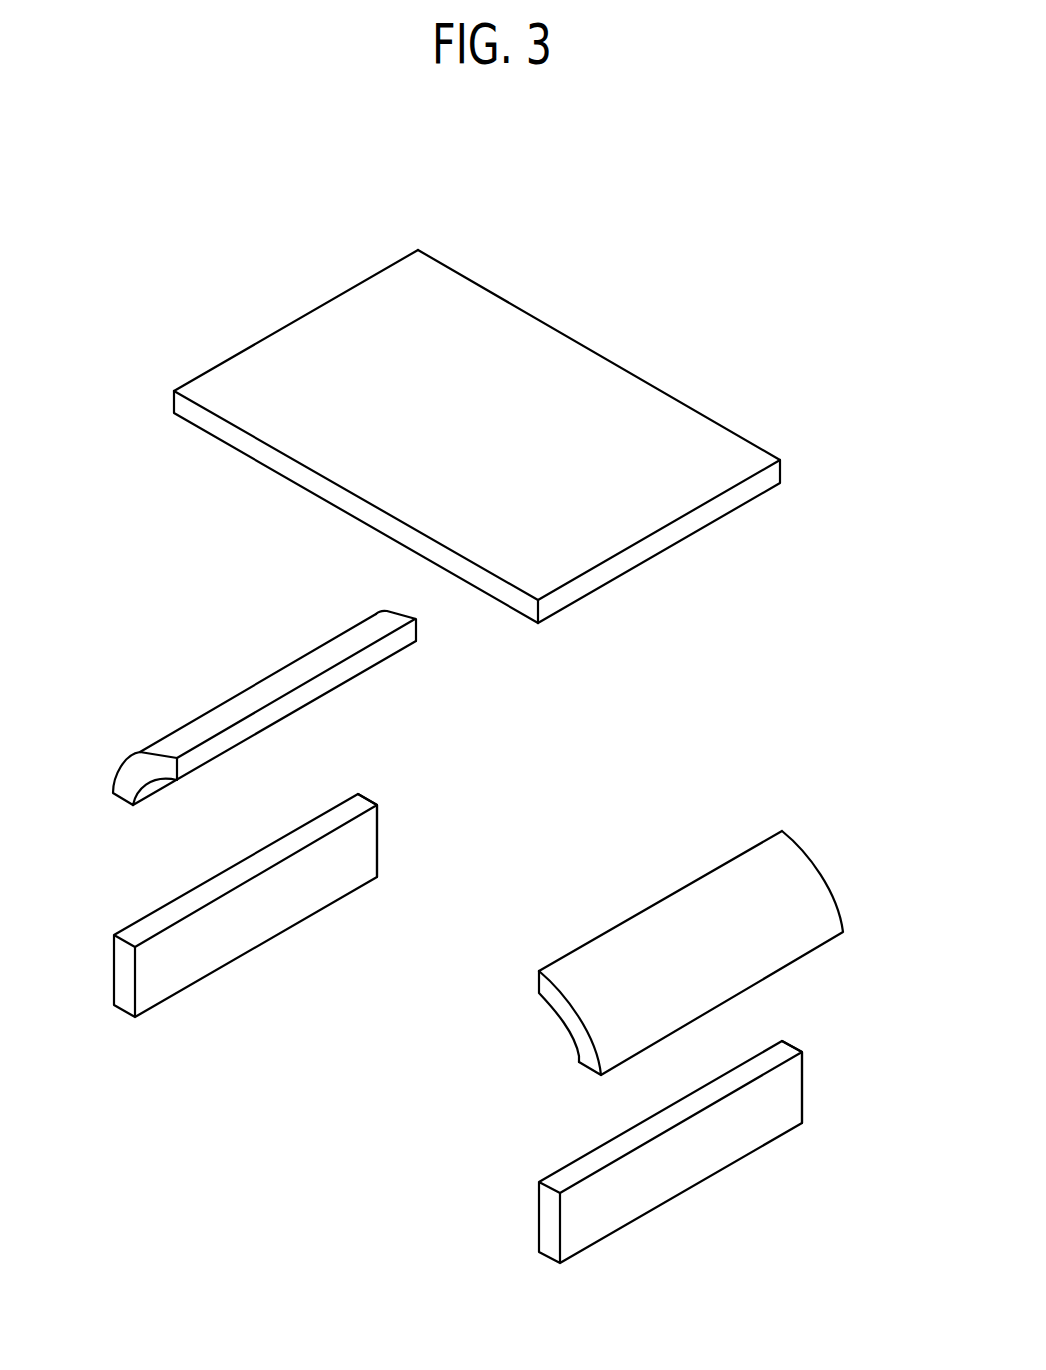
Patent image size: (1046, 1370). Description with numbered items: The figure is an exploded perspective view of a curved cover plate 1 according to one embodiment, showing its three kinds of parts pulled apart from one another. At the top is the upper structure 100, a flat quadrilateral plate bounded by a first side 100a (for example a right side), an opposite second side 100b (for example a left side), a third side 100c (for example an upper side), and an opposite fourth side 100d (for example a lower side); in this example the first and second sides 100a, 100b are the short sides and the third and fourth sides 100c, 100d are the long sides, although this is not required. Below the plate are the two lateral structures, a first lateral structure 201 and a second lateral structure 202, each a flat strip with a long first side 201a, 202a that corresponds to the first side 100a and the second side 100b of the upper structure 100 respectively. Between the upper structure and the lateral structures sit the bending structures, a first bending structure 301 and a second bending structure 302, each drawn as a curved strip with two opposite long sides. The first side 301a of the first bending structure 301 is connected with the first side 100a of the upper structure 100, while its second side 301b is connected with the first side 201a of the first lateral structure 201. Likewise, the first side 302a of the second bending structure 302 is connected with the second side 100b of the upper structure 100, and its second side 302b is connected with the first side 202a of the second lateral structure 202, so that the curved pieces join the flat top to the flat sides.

The curved cover plate 1 is at (790, 275).
The upper structure 100 is at (490, 436).
The first side of the upper structure 100a is at (658, 542).
The second side of the upper structure 100b is at (293, 317).
The third side of the upper structure 100c is at (605, 355).
The fourth side of the upper structure 100d is at (340, 494).
The first lateral structure 201 is at (707, 1134).
The first side of the first lateral structure 201a is at (788, 1050).
The second lateral structure 202 is at (282, 887).
The first side of the second lateral structure 202a is at (362, 803).
The first bending structure 301 is at (670, 975).
The first side of the first bending structure 301a is at (538, 985).
The second side of the first bending structure 301b is at (587, 1070).
The second bending structure 302 is at (255, 730).
The first side of the second bending structure 302a is at (387, 648).
The second side of the second bending structure 302b is at (122, 800).